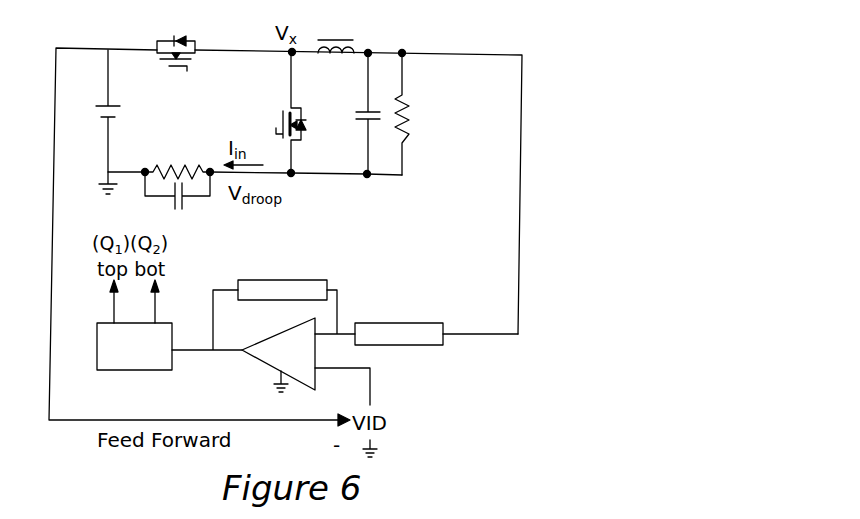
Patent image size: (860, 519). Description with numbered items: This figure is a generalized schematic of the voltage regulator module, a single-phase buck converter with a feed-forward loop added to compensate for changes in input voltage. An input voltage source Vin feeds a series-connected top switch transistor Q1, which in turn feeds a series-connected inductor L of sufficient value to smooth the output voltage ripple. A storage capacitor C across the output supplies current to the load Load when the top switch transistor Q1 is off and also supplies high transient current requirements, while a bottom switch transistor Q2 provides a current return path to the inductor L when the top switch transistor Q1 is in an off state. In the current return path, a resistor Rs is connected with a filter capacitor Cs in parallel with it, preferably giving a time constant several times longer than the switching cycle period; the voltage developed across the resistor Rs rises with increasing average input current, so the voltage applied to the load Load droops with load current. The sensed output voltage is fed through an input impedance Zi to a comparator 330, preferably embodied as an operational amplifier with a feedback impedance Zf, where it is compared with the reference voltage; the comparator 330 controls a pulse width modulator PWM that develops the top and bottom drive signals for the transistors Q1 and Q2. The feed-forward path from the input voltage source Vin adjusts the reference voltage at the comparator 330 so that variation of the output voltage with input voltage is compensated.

The comparator 330 is at (262, 361).
The top switch transistor Q1 is at (176, 40).
The bottom switch transistor Q2 is at (273, 112).
The inductor L is at (336, 35).
The storage capacitor C is at (356, 113).
The resistor Rs is at (177, 158).
The filter capacitor Cs is at (177, 197).
The feedback impedance Zf is at (282, 278).
The input impedance Zi is at (399, 321).
The pulse width modulator PWM is at (134, 325).
The voltage source Vin is at (120, 122).
The load Load is at (414, 118).